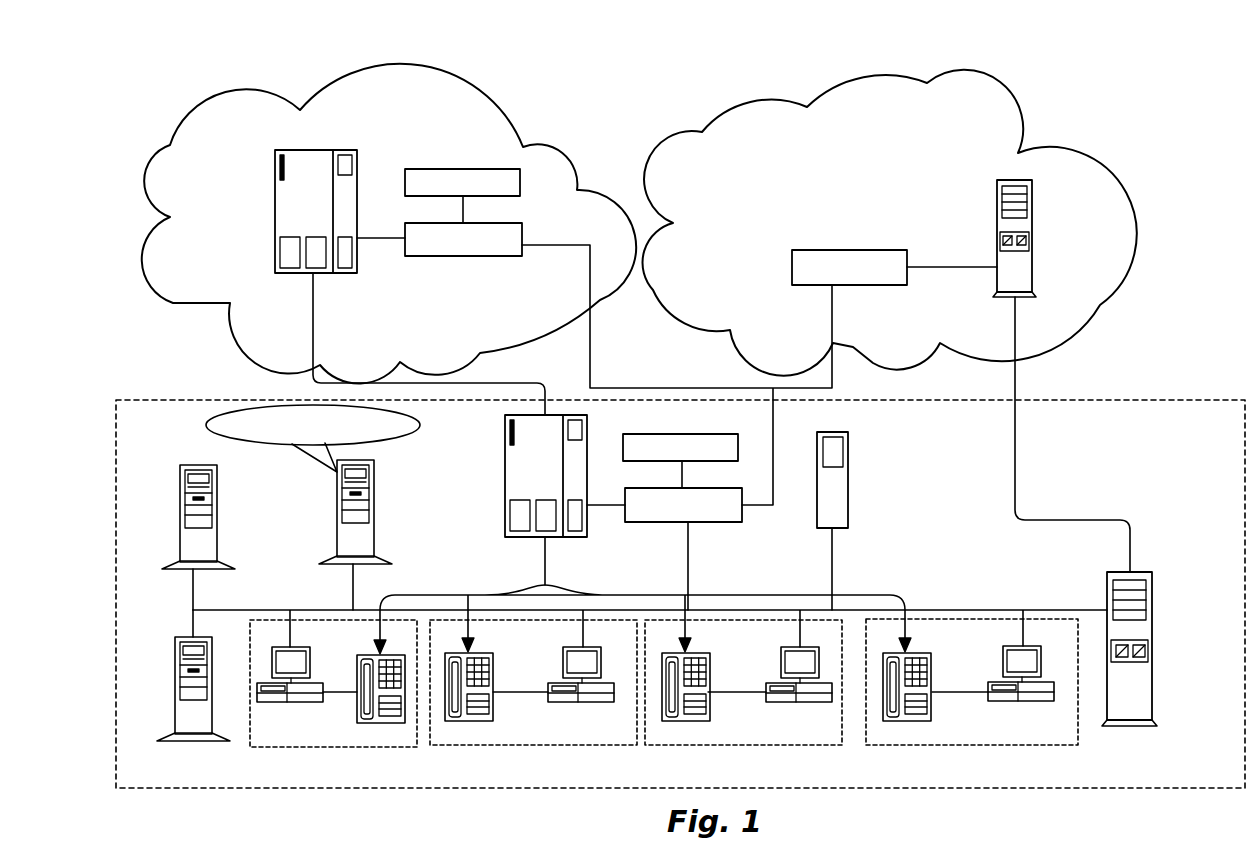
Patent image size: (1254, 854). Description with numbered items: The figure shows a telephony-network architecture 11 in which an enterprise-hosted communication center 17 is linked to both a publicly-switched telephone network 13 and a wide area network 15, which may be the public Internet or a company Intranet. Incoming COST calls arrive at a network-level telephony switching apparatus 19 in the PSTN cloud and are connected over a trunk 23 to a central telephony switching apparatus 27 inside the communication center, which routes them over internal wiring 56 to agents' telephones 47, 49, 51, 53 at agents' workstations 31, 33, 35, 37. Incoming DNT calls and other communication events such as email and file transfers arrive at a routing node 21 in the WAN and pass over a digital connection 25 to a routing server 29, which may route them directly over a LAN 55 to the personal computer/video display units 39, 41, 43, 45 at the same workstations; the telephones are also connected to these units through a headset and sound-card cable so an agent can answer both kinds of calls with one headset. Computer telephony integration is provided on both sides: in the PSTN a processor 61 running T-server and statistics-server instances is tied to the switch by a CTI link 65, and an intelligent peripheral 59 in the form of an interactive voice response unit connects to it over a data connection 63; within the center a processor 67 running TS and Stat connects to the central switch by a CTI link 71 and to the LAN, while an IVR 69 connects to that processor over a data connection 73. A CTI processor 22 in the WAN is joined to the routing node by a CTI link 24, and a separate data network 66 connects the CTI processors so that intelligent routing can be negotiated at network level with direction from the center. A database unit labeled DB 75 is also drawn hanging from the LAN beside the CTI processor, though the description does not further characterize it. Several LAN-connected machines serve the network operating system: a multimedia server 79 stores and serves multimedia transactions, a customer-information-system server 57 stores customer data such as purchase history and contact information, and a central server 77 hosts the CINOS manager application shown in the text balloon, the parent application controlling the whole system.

The telephony-network architecture 11 is at (627, 72).
The publicly-switched telephone network 13 is at (170, 145).
The wide area network 15 is at (702, 132).
The communication center 17 is at (1118, 397).
The network-level telephony switching apparatus 19 is at (275, 222).
The routing node 21 is at (997, 252).
The CTI processor 22 is at (792, 270).
The trunk 23 is at (313, 335).
The CTI link 24 is at (947, 267).
The digital connection 25 is at (1015, 347).
The central telephony switching apparatus 27 is at (505, 495).
The routing server 29 is at (1152, 607).
The agent workstation 31 is at (355, 745).
The agent workstation 33 is at (543, 745).
The agent workstation 35 is at (758, 745).
The agent workstation 37 is at (983, 745).
The personal computer/video display unit 39 is at (315, 703).
The personal computer/video display unit 41 is at (563, 703).
The personal computer/video display unit 43 is at (777, 703).
The personal computer/video display unit 45 is at (1000, 705).
The agent telephone 47 is at (357, 678).
The agent telephone 49 is at (493, 683).
The agent telephone 51 is at (708, 683).
The agent telephone 53 is at (932, 683).
The local area network 55 is at (330, 610).
The internal wiring 56 is at (485, 595).
The customer-information-system server 57 is at (175, 690).
The intelligent peripheral 59 is at (427, 169).
The processor 61 is at (465, 256).
The data connection 63 is at (463, 210).
The CTI link 65 is at (367, 238).
The data network 66 is at (630, 388).
The processor 67 is at (680, 522).
The interactive voice response unit 69 is at (680, 434).
The CTI link 71 is at (597, 505).
The data connection 73 is at (690, 480).
The database 75 is at (817, 487).
The central server 77 is at (337, 525).
The multimedia server 79 is at (180, 525).